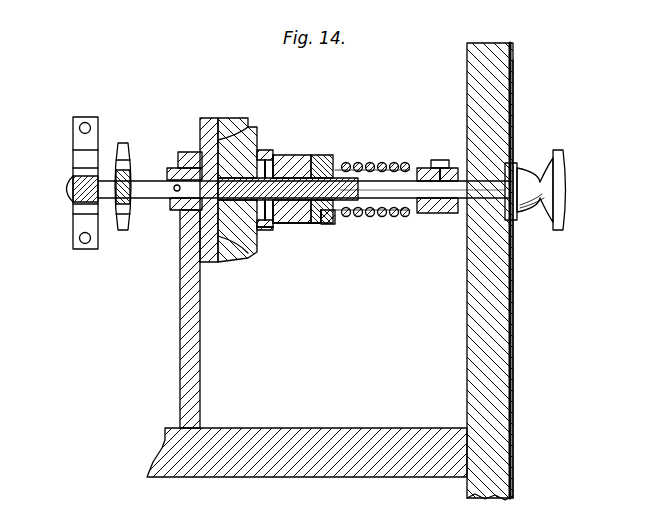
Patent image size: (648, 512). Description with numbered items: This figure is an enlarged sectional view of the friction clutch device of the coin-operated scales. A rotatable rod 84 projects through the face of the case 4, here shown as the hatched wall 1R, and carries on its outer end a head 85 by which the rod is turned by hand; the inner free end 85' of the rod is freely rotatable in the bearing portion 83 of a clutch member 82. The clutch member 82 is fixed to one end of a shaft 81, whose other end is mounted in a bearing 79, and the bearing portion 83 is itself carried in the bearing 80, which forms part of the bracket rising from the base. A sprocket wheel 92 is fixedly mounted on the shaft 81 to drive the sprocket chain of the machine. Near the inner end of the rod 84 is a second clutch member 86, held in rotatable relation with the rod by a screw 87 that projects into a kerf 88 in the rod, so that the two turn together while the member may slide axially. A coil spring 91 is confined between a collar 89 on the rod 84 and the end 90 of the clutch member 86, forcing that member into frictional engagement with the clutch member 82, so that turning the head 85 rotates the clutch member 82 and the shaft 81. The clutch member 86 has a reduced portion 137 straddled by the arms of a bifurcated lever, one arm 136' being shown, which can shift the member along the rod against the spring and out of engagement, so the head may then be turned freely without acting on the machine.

The bearing 79 is at (73, 172).
The sprocket wheel 92 is at (124, 146).
The shaft 81 is at (145, 183).
The bearing portion 83 is at (172, 212).
The bearing 80 is at (182, 240).
The clutch member 82 is at (210, 143).
The cap 85' is at (279, 165).
The screw 87 is at (280, 156).
The arm of bifurcated lever 136' is at (324, 152).
The reduced portion 137 is at (327, 157).
The rotatable rod 84 is at (412, 181).
The head 85 is at (557, 189).
The clutch member 86 is at (266, 229).
The kerf 88 is at (280, 226).
The end of clutch member 90 is at (326, 226).
The coil spring 91 is at (386, 222).
The collar 89 is at (434, 216).
The wall 1R is at (500, 285).
The case 4 is at (517, 408).